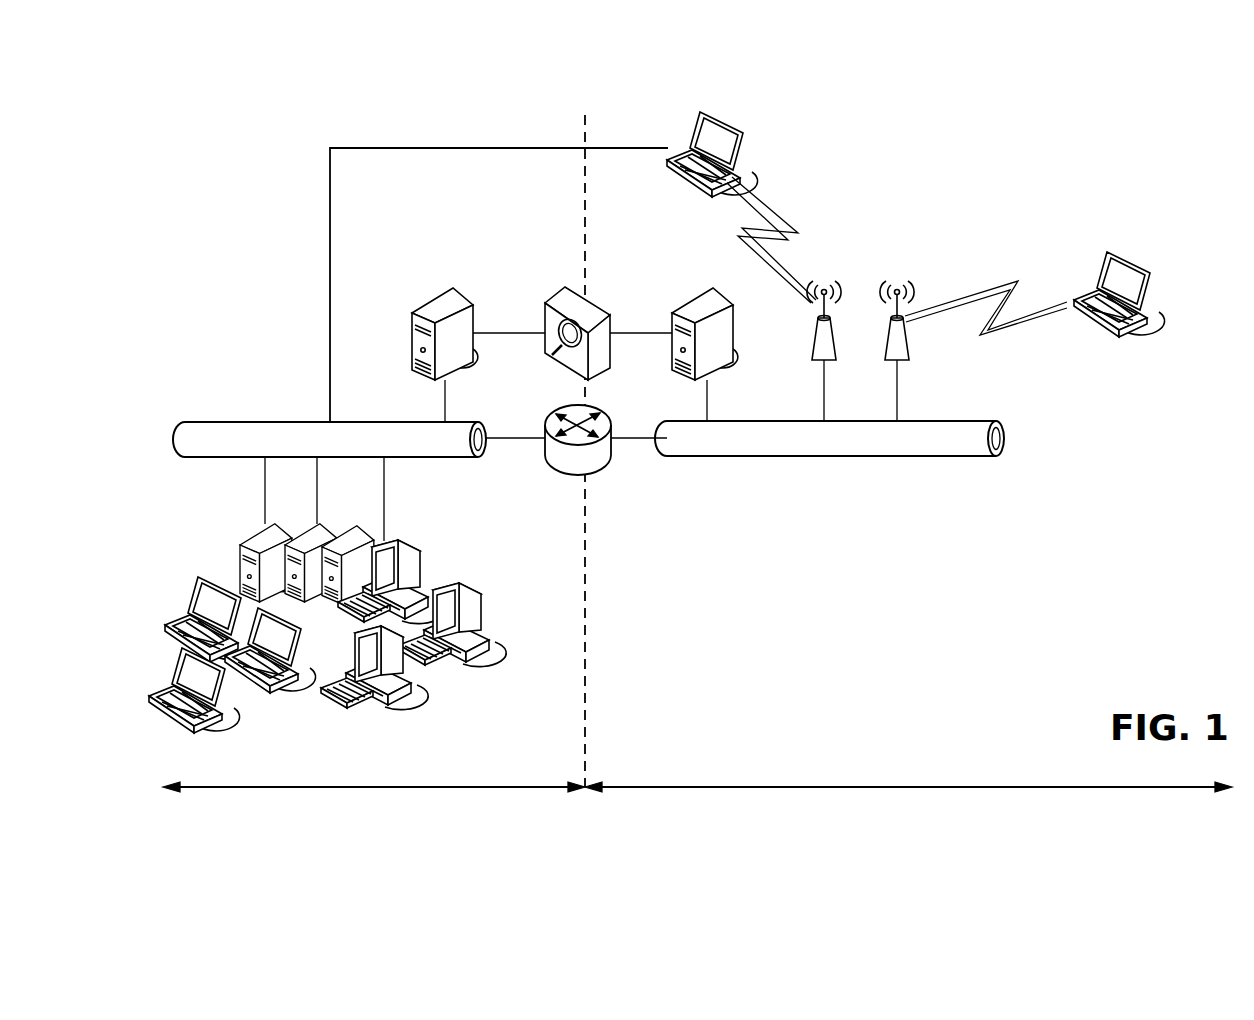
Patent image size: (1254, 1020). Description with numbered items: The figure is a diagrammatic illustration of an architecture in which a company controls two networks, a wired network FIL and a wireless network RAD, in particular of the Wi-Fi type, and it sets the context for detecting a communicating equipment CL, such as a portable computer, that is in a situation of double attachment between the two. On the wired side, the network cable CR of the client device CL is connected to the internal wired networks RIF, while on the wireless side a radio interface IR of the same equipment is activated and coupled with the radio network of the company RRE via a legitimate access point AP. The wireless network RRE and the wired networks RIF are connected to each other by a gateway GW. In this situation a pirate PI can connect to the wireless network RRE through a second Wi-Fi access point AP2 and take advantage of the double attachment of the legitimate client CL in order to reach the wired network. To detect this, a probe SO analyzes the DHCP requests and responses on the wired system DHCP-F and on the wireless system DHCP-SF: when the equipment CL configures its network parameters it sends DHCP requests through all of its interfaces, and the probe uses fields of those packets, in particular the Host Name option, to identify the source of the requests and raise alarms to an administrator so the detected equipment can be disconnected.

The network cable CR is at (380, 147).
The communicating equipment CL is at (718, 118).
The radio interface IR is at (738, 175).
The legitimate access point AP is at (830, 280).
The Wi-Fi access point AP2 is at (899, 282).
The pirate PI is at (1128, 262).
The wired system DHCP DHCP-F is at (427, 298).
The probe SO is at (550, 292).
The wireless system DHCP DHCP-SF is at (688, 300).
The internal wired networks RIF is at (200, 422).
The gateway GW is at (600, 470).
The radio network of the company RRE is at (863, 445).
The wireless network RAD is at (894, 787).
The wired network FIL is at (410, 788).